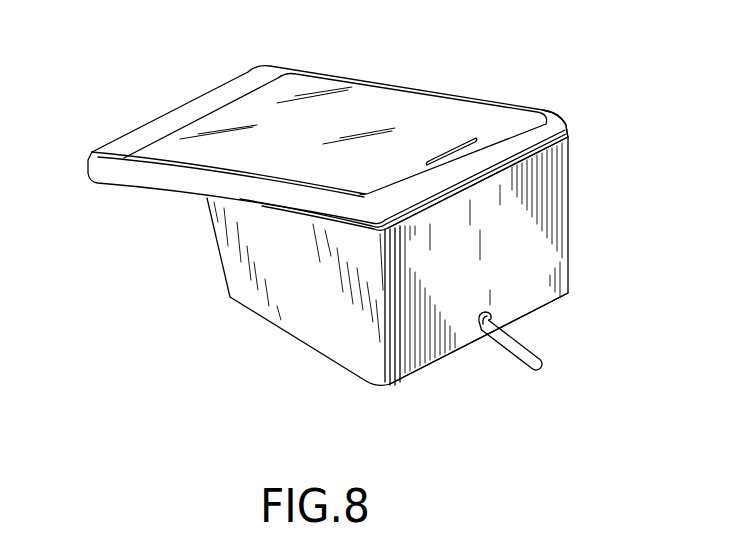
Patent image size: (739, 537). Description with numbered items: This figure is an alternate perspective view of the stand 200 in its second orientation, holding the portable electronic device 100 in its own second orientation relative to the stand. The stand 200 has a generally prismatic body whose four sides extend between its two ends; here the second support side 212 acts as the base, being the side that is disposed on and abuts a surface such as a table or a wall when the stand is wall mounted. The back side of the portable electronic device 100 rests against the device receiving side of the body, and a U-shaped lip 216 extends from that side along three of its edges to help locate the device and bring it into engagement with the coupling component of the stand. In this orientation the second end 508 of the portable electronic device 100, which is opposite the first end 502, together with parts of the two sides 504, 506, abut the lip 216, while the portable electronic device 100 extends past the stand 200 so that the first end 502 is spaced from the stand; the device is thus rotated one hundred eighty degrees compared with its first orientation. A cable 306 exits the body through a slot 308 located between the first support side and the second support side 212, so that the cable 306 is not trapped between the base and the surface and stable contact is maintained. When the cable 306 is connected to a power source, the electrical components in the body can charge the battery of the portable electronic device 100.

The portable electronic device 100 is at (519, 110).
The stand 200 is at (348, 374).
The second support side 212 is at (437, 364).
The U-shaped lip 216 is at (483, 176).
The cable 306 is at (532, 351).
The slot 308 is at (496, 318).
The first end 502 is at (157, 117).
The side 504 is at (176, 192).
The side 506 is at (331, 74).
The second end 508 is at (550, 122).